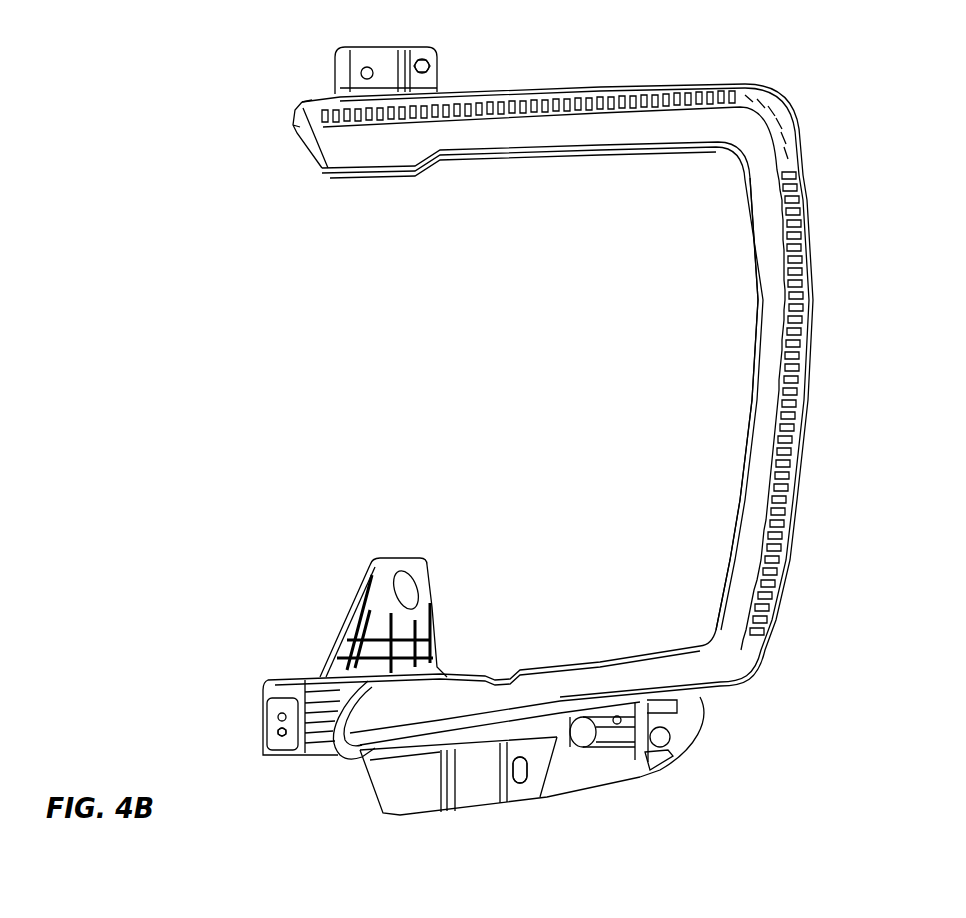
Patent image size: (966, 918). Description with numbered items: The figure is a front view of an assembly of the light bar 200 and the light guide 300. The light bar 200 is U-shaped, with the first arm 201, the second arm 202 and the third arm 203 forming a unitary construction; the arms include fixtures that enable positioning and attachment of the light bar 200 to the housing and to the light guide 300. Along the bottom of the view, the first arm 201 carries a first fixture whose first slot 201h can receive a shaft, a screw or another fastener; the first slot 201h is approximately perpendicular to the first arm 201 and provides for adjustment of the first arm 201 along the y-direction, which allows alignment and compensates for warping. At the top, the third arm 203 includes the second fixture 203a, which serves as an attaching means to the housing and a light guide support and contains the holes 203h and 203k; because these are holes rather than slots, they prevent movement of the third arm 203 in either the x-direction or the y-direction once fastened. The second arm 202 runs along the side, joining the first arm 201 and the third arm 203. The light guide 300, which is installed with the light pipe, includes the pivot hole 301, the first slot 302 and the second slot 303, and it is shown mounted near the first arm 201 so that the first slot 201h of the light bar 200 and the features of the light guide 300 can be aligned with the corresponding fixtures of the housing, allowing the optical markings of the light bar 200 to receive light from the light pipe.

The light bar 200 is at (549, 448).
The first arm 201 is at (592, 660).
The first slot 201h is at (575, 811).
The second arm 202 is at (748, 443).
The third arm 203 is at (485, 140).
The second fixture 203a is at (332, 77).
The hole 203h is at (430, 68).
The hole 203k is at (365, 68).
The light guide 300 is at (437, 590).
The pivot hole 301 is at (665, 740).
The first slot 302 is at (527, 780).
The second slot 303 is at (412, 585).